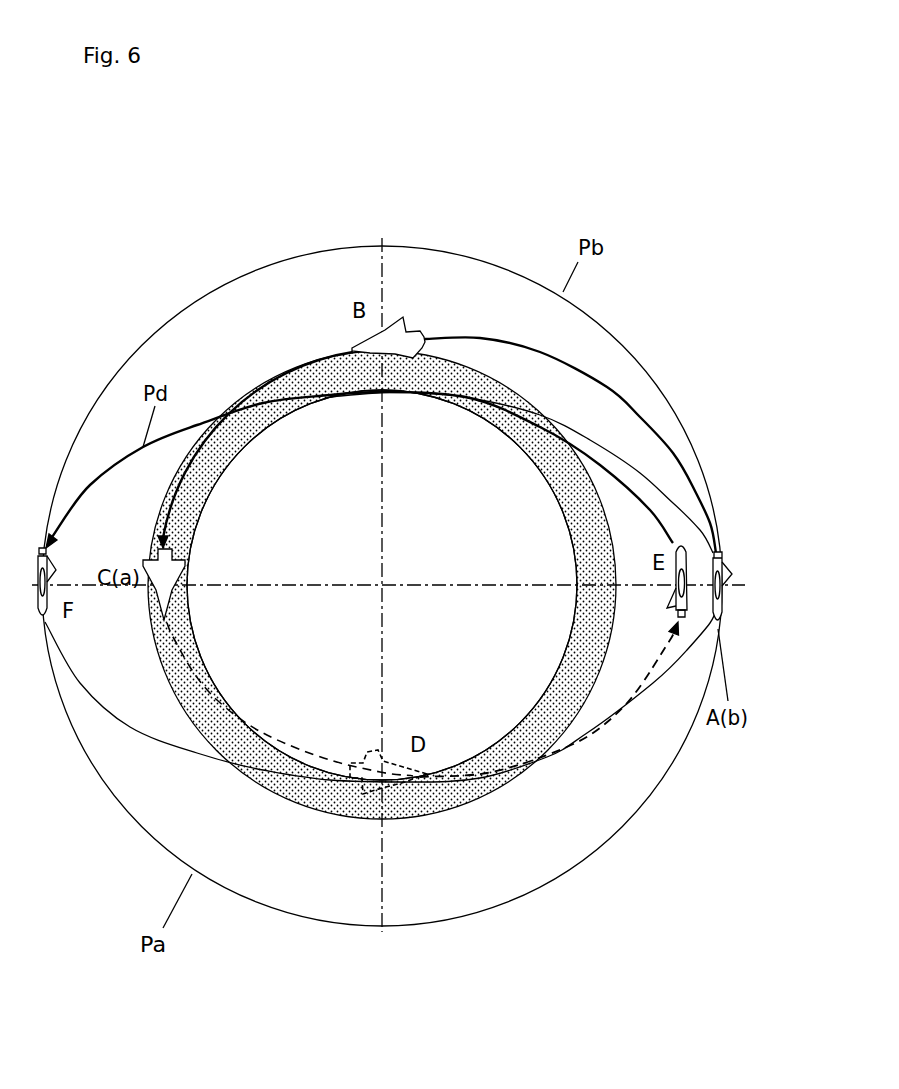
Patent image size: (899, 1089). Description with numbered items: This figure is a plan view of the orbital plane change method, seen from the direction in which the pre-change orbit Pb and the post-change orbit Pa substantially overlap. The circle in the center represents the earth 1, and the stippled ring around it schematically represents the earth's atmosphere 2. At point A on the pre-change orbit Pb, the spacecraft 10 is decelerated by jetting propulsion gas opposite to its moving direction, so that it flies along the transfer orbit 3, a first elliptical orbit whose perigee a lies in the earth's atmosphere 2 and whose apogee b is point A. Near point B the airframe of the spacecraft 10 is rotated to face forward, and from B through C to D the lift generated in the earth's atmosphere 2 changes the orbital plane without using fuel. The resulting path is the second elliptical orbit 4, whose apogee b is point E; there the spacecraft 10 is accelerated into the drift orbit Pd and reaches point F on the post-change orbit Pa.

The earth 1 is at (432, 572).
The earth's atmosphere 2 is at (440, 797).
The transfer orbit 3 is at (482, 336).
The second elliptical orbit 4 is at (629, 701).
The spacecraft 10 is at (718, 560).